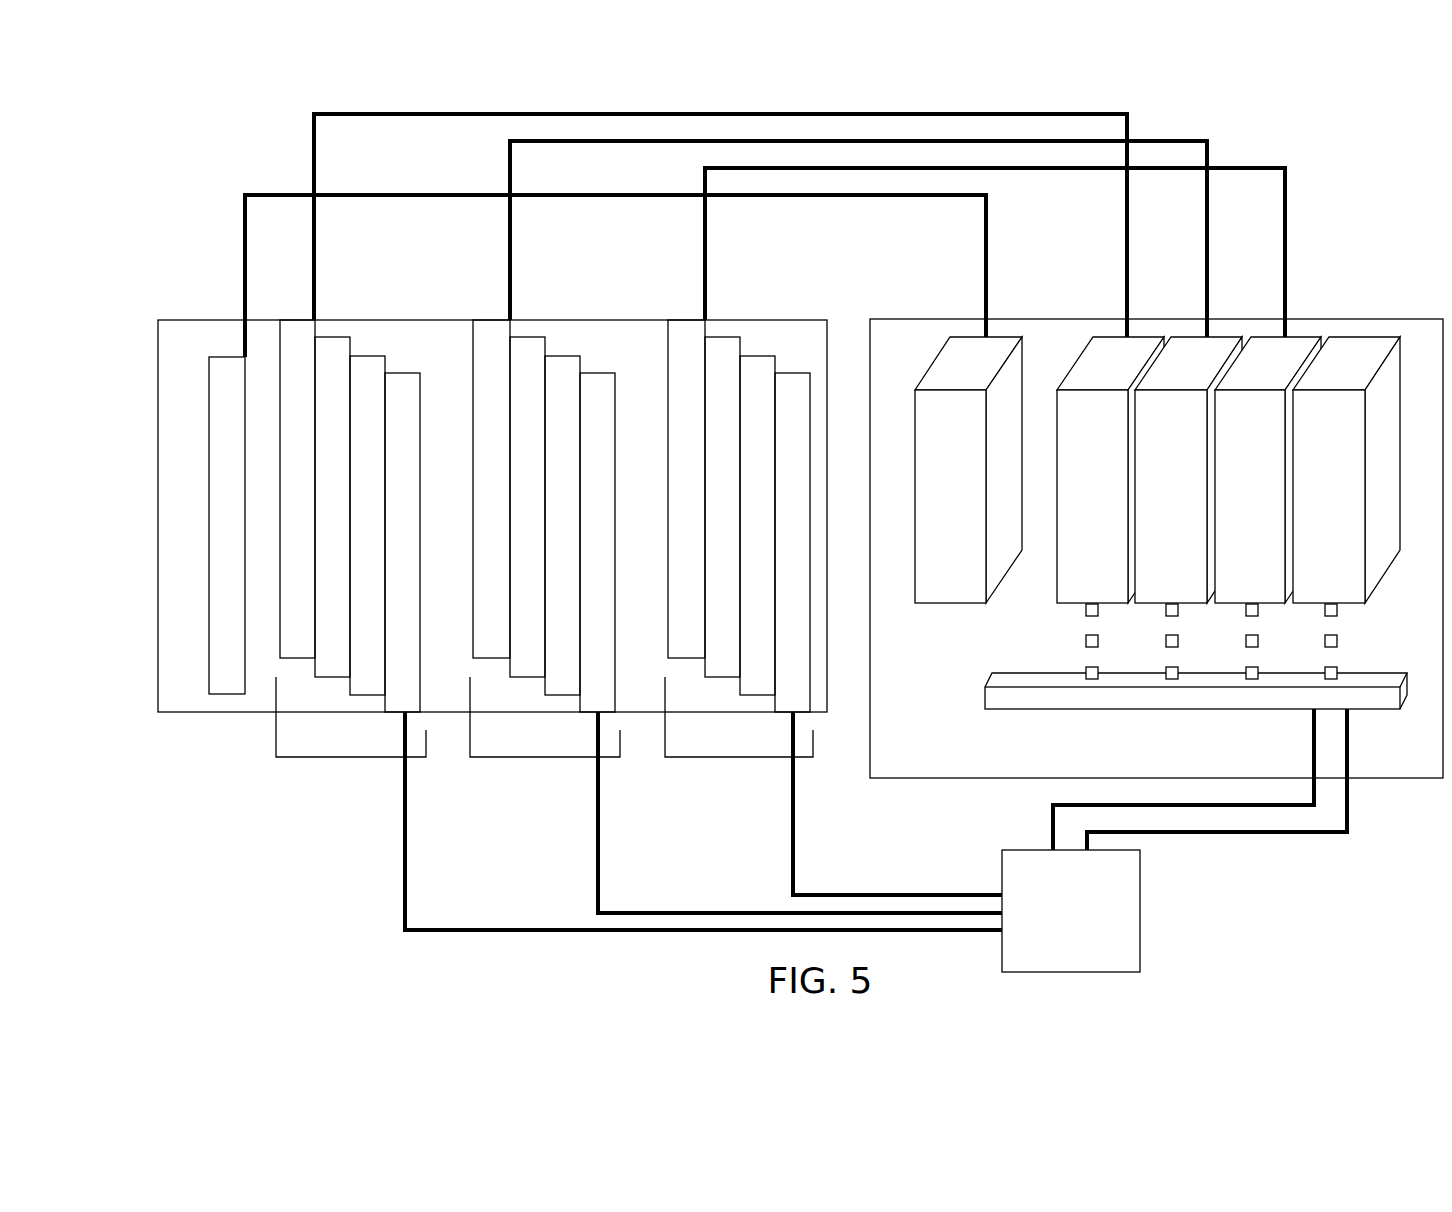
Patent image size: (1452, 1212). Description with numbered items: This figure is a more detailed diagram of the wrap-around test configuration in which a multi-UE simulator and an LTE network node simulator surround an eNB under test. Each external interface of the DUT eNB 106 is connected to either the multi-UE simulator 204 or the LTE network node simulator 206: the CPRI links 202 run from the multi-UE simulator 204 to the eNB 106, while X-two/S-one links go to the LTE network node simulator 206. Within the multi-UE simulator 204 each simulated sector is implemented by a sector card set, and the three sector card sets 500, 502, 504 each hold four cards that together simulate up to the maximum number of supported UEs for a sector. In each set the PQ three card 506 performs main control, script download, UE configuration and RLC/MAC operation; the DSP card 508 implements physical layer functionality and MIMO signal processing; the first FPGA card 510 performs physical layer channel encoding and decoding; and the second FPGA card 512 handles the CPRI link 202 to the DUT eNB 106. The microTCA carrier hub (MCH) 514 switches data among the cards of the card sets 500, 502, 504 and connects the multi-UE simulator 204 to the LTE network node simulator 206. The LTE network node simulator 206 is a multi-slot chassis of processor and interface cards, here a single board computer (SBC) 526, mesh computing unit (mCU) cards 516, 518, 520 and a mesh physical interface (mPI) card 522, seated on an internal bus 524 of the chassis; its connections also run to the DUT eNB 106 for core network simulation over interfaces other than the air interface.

The DUT eNB 106 is at (1147, 910).
The CPRI links 202 is at (403, 897).
The multi-UE simulator 204 is at (184, 712).
The LTE network node simulator 206 is at (937, 778).
The sector card set 500 is at (350, 757).
The sector card set 502 is at (545, 757).
The sector card set 504 is at (739, 757).
The PQ3 card 506 is at (297, 320).
The DSP card 508 is at (332, 337).
The FPGA1 card 510 is at (368, 356).
The FPGA2 card 512 is at (407, 373).
The microTCA carrier hub (MCH) 514 is at (229, 357).
The mCU (a) unit 516 is at (1071, 603).
The mCU (b) unit 518 is at (1150, 603).
The mCU (c) unit 520 is at (1229, 603).
The mPI unit 522 is at (1308, 603).
The backplane bus 524 is at (1234, 709).
The SBC single board computer 526 is at (928, 603).